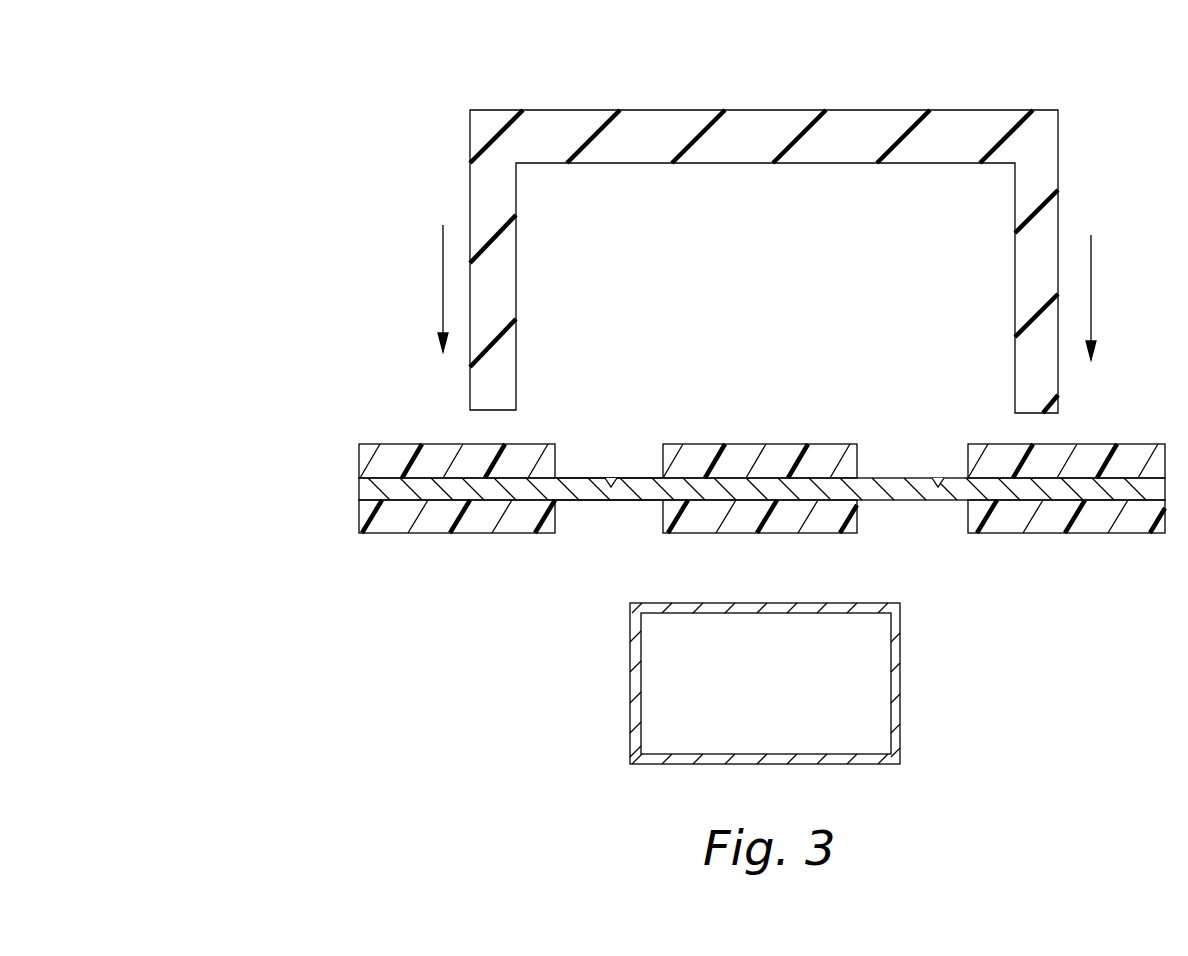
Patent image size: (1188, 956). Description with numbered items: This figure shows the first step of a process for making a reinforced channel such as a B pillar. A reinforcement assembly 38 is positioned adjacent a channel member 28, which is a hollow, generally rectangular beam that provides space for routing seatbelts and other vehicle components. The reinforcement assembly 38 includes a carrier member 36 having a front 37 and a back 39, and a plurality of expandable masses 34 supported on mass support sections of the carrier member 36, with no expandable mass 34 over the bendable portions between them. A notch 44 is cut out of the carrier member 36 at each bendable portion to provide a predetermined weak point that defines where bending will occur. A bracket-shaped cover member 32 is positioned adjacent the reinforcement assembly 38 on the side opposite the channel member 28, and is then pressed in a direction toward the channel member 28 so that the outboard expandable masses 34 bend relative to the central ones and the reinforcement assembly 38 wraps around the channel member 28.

The channel member 28 is at (630, 706).
The cover member 32 is at (755, 118).
The expandable masses 34 is at (408, 446).
The carrier member 36 is at (912, 503).
The front 37 is at (573, 503).
The reinforcement assembly 38 is at (681, 487).
The back 39 is at (570, 477).
The notch 44 is at (608, 478).